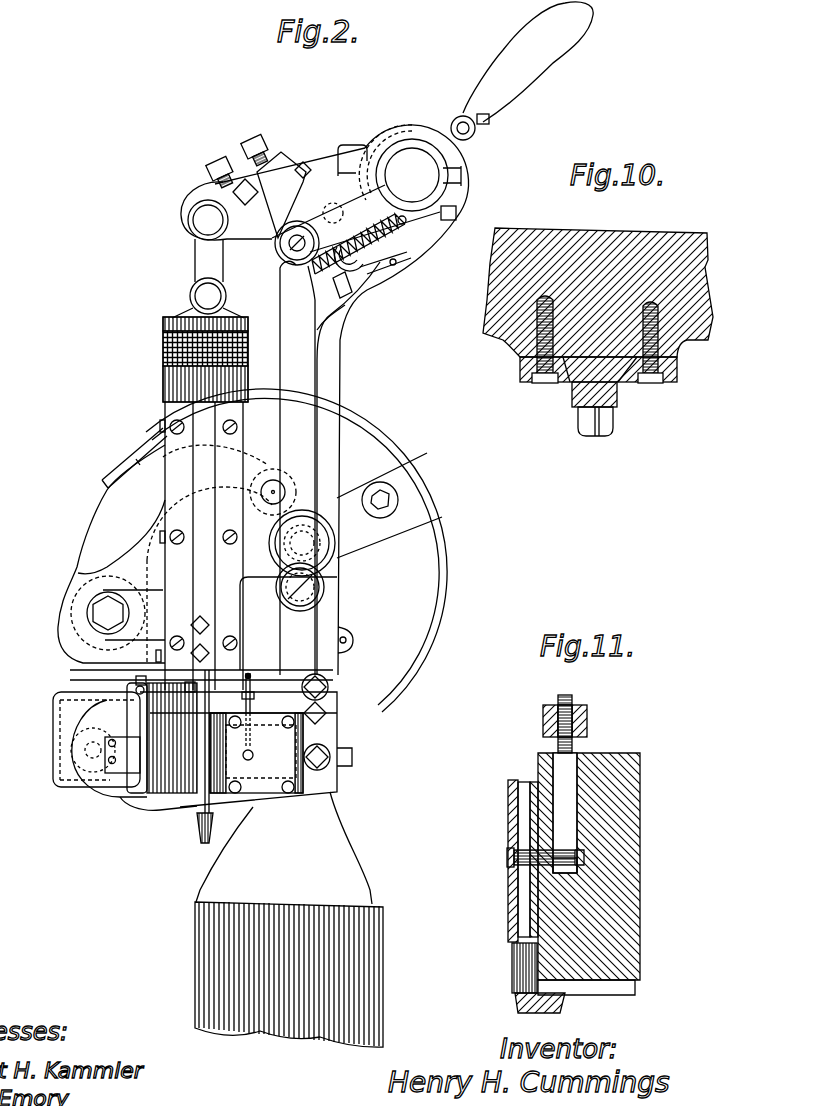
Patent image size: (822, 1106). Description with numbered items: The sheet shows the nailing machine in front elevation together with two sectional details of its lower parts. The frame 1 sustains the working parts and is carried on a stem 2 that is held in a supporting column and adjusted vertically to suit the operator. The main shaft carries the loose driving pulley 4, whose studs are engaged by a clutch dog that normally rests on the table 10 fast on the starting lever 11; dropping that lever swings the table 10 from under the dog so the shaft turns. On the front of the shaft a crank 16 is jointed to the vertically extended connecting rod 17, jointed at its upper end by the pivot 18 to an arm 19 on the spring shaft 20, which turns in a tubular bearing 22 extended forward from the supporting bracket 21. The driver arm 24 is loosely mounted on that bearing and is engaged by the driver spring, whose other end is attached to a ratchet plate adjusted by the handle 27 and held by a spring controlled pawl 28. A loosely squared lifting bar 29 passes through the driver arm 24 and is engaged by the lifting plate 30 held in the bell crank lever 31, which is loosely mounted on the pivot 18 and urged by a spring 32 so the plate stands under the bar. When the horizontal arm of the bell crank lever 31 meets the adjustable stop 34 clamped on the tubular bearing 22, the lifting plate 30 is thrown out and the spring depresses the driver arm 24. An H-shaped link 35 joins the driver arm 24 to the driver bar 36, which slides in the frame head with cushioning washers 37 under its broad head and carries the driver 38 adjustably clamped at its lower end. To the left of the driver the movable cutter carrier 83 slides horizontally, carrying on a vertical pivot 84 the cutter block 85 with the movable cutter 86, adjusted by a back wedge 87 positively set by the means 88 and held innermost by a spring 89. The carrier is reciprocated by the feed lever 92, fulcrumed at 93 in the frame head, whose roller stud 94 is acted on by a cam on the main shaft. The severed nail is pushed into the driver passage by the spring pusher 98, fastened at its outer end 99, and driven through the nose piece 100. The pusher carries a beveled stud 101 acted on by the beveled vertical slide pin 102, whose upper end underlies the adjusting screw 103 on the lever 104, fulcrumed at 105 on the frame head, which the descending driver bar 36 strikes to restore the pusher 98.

In FIG. 10, the frame 1 is at (634, 236).
In FIG. 2, the stem 2 is at (370, 956).
In FIG. 2, the driving pulley 4 is at (447, 580).
In FIG. 2, the table 10 is at (237, 643).
In FIG. 2, the starting lever 11 is at (192, 843).
In FIG. 2, the crank 16 is at (322, 550).
In FIG. 2, the connecting rod 17 is at (297, 468).
In FIG. 2, the pivot 18 is at (290, 245).
In FIG. 2, the arm 19 is at (343, 202).
In FIG. 2, the spring shaft 20 is at (424, 170).
In FIG. 2, the supporting bracket 21 is at (358, 285).
In FIG. 2, the tubular bearing 22 is at (436, 190).
In FIG. 2, the driver arm 24 is at (313, 157).
In FIG. 2, the handle 27 is at (567, 62).
In FIG. 2, the spring controlled pawl 28 is at (392, 242).
In FIG. 2, the lifting bar 29 is at (242, 190).
In FIG. 2, the lifting plate 30 is at (265, 211).
In FIG. 2, the bell crank lever 31 is at (272, 195).
In FIG. 2, the spring 32 is at (343, 305).
In FIG. 2, the stop 34 is at (351, 146).
In FIG. 2, the H-shaped link 35 is at (203, 258).
In FIG. 2, the driver bar 36 is at (200, 408).
In FIG. 10, the driver bar 36 is at (577, 373).
In FIG. 2, the cushioning washers 37 is at (163, 350).
In FIG. 2, the driver 38 is at (197, 693).
In FIG. 10, the driver 38 is at (617, 387).
In FIG. 2, the movable cutter carrier 83 is at (62, 733).
In FIG. 2, the vertical pivot 84 is at (150, 795).
In FIG. 2, the cutter block 85 is at (145, 793).
In FIG. 2, the movable cutter 86 is at (173, 790).
In FIG. 2, the back wedge 87 is at (132, 692).
In FIG. 2, the wedge adjusting means 88 is at (140, 700).
In FIG. 2, the spring 89 is at (125, 760).
In FIG. 2, the feed lever 92 is at (93, 529).
In FIG. 2, the fulcrum 93 is at (92, 613).
In FIG. 2, the roller stud 94 is at (293, 482).
In FIG. 2, the pusher 98 is at (262, 773).
In FIG. 11, the pusher 98 is at (508, 897).
In FIG. 2, the outer end 99 is at (329, 752).
In FIG. 2, the nose piece 100 is at (203, 830).
In FIG. 11, the nose piece 100 is at (515, 1000).
In FIG. 2, the stud 101 is at (253, 742).
In FIG. 11, the stud 101 is at (512, 862).
In FIG. 11, the vertical slide pin 102 is at (548, 773).
In FIG. 2, the adjusting screw 103 is at (253, 675).
In FIG. 11, the adjusting screw 103 is at (572, 695).
In FIG. 2, the lever 104 is at (260, 690).
In FIG. 11, the lever 104 is at (587, 724).
In FIG. 2, the fulcrum 105 is at (330, 693).